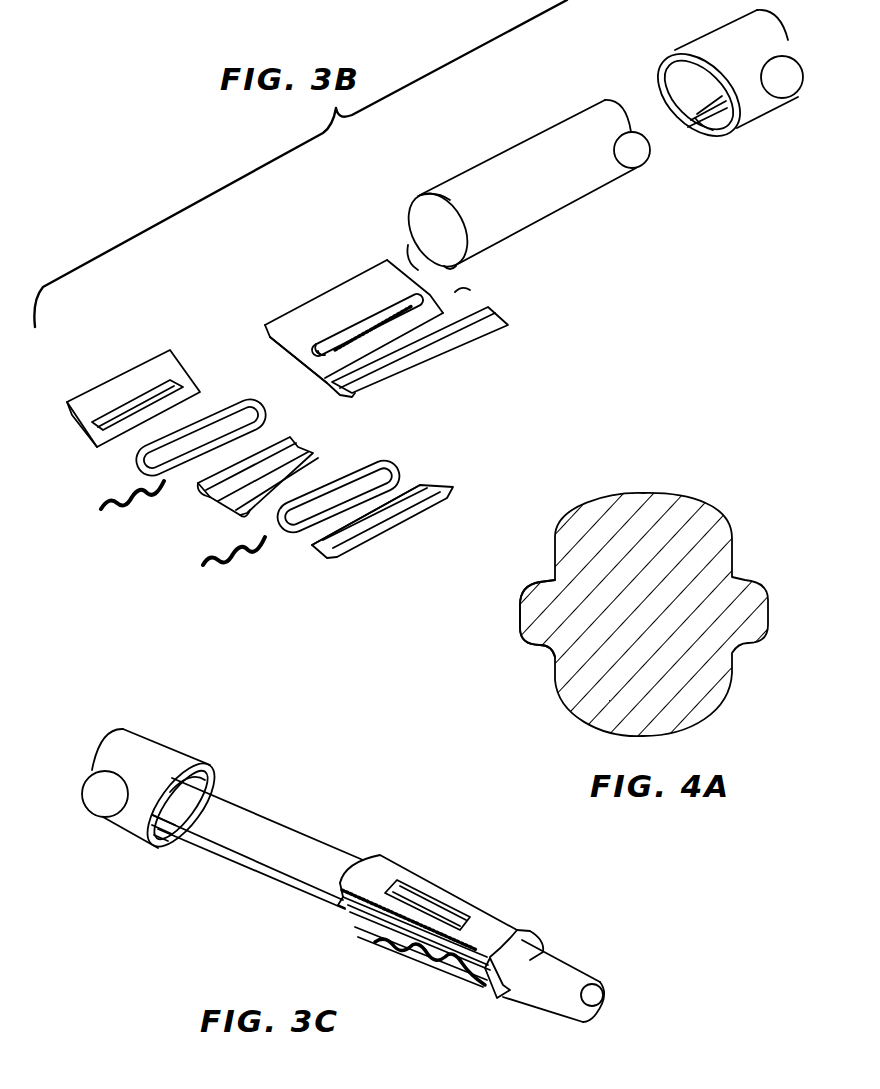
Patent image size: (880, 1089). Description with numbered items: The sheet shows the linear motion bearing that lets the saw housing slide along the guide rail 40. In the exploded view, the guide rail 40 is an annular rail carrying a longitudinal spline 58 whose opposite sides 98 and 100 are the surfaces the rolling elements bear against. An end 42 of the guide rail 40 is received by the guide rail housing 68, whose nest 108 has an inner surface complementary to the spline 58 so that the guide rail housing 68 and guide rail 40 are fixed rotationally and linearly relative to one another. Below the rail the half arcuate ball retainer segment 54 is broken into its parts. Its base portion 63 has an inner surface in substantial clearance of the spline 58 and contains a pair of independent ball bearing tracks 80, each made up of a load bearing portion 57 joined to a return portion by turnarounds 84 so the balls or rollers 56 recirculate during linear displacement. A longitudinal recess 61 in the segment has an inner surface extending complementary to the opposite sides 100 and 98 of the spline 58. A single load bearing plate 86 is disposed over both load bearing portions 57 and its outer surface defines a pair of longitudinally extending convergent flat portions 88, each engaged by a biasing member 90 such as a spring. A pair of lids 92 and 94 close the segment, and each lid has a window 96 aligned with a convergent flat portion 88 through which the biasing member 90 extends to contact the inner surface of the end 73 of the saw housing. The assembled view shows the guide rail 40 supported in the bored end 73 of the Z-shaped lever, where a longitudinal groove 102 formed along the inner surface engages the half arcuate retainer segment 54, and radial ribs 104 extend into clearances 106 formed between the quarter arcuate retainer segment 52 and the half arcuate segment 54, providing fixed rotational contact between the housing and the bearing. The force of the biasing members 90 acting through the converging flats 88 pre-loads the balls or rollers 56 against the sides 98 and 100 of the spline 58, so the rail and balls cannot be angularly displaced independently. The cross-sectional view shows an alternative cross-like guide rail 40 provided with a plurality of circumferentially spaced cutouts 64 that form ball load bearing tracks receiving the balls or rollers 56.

In FIG. 3B, the guide rail 40 is at (538, 140).
In FIG. 3C, the guide rail 40 is at (378, 900).
In FIG. 4A, the guide rail 40 is at (736, 488).
In FIG. 3B, the end of the guide rail 42 is at (440, 197).
In FIG. 3B, the guide rail housing 68 is at (665, 57).
In FIG. 3B, the nest 108 is at (693, 128).
In FIG. 3B, the side of the spline 98 is at (448, 270).
In FIG. 3B, the spline 58 is at (460, 292).
In FIG. 3C, the spline 58 is at (220, 857).
In FIG. 3B, the side of the spline 100 is at (417, 258).
In FIG. 3B, the ball bearing track 80 is at (378, 303).
In FIG. 3B, the load bearing portion 57 is at (355, 340).
In FIG. 3B, the turnaround 84 is at (322, 350).
In FIG. 3B, the lid 92 is at (243, 433).
In FIG. 3C, the lid 92 is at (477, 985).
In FIG. 3B, the window 96 is at (107, 413).
In FIG. 3B, the balls or rollers 56 is at (228, 397).
In FIG. 3B, the base portion 63 is at (327, 365).
In FIG. 3B, the longitudinal recess 61 is at (407, 335).
In FIG. 3B, the half arcuate ball retainer segment 54 is at (392, 338).
In FIG. 3B, the biasing member 90 is at (103, 508).
In FIG. 3C, the biasing member 90 is at (410, 967).
In FIG. 3B, the convergent flat portion 88 is at (238, 517).
In FIG. 3B, the load bearing plate 86 is at (231, 495).
In FIG. 3B, the lid 94 is at (362, 538).
In FIG. 3C, the lid 94 is at (517, 1002).
In FIG. 3C, the end of the Z-shaped lever 73 is at (173, 794).
In FIG. 3C, the radial rib 104 is at (180, 780).
In FIG. 3C, the longitudinal groove 102 is at (170, 848).
In FIG. 3C, the clearance 106 is at (347, 930).
In FIG. 3C, the quarter arcuate self-contained rolling element retainer segment 52 is at (387, 873).
In FIG. 4A, the cutout 64 is at (552, 653).